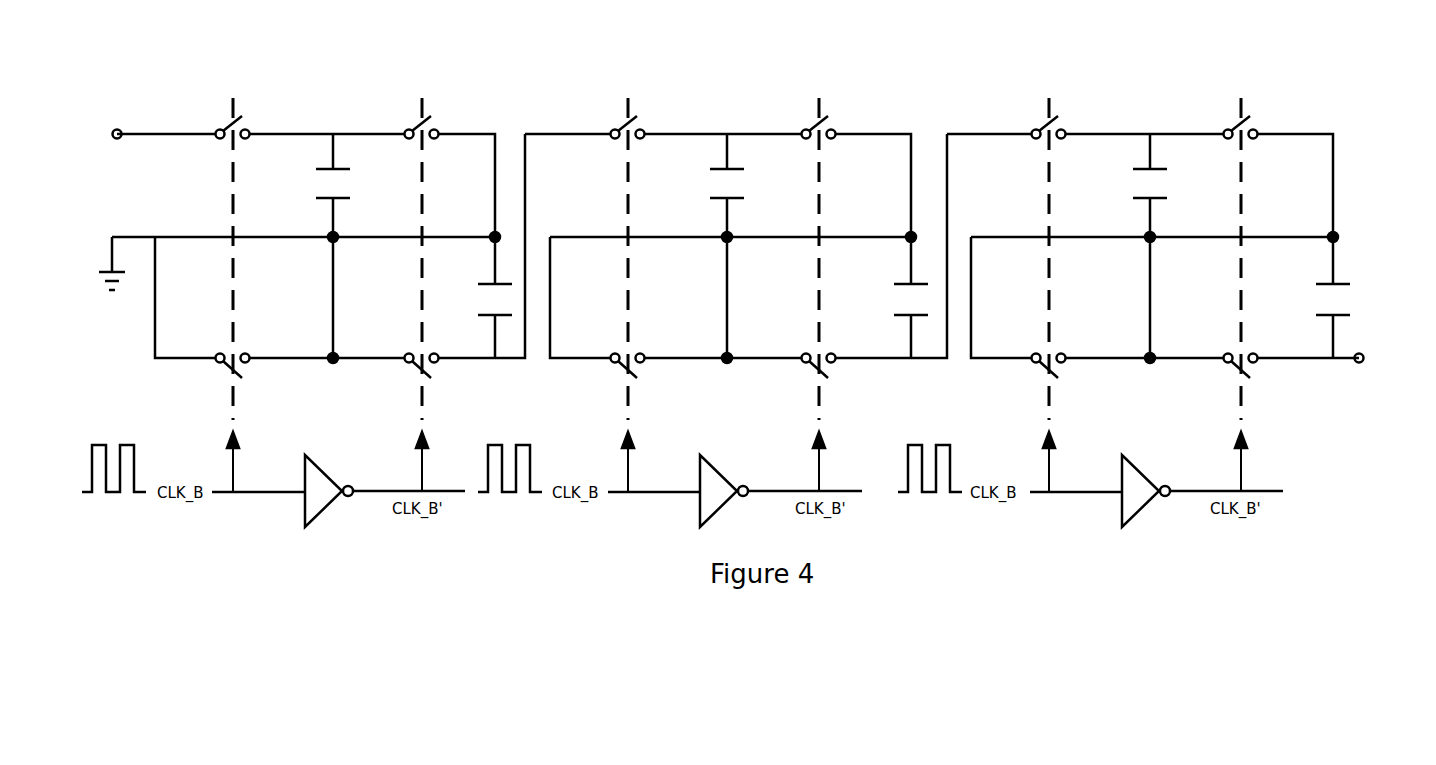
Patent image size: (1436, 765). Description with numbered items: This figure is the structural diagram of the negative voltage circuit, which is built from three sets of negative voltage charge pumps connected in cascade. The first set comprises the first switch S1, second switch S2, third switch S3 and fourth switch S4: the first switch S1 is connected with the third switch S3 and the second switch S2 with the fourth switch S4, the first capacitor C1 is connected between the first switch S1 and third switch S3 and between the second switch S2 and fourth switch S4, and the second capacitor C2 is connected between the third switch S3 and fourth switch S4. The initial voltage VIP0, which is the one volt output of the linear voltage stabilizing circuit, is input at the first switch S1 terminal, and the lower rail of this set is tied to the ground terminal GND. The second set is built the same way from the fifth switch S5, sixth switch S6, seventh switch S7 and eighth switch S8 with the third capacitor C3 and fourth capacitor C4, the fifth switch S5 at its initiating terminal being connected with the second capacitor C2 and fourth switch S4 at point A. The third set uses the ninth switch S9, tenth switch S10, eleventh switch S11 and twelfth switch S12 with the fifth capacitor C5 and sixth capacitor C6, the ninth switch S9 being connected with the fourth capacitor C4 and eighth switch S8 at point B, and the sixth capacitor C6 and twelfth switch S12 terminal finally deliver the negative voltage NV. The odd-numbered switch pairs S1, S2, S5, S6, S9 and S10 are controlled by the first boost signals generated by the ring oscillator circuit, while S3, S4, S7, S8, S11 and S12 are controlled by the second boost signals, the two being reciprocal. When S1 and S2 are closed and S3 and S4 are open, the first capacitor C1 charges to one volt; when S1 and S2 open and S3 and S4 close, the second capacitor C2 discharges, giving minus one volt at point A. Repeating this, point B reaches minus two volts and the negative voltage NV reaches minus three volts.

The initial voltage VIP0 is at (126, 122).
The negative voltage NV is at (1384, 361).
The ground terminal GND is at (112, 263).
The point A is at (527, 132).
The point B is at (948, 132).
The first switch S1 is at (236, 259).
The second switch S2 is at (236, 410).
The third switch S3 is at (425, 259).
The fourth switch S4 is at (425, 410).
The fifth switch S5 is at (615, 259).
The sixth switch S6 is at (615, 410).
The seventh switch S7 is at (827, 259).
The eighth switch S8 is at (827, 410).
The ninth switch S9 is at (1052, 259).
The tenth switch S10 is at (1057, 410).
The eleventh switch S11 is at (1251, 259).
The twelfth switch S12 is at (1251, 410).
The first capacitor C1 is at (316, 185).
The second capacitor C2 is at (481, 297).
The third capacitor C3 is at (710, 185).
The fourth capacitor C4 is at (897, 297).
The fifth capacitor C5 is at (1134, 185).
The sixth capacitor C6 is at (1319, 297).